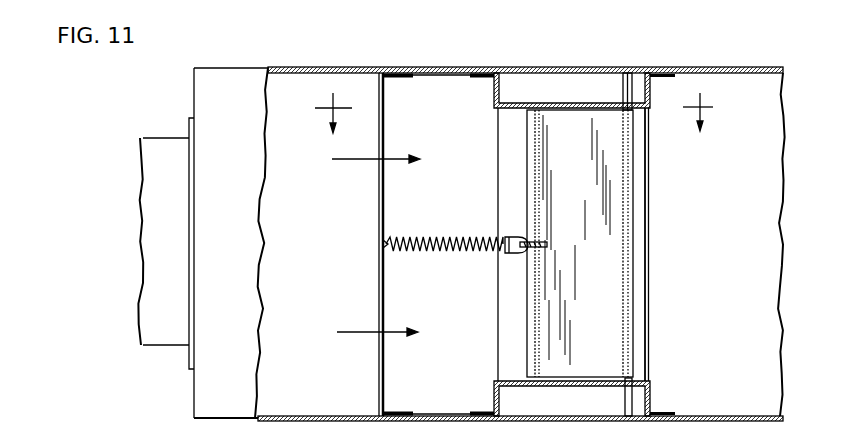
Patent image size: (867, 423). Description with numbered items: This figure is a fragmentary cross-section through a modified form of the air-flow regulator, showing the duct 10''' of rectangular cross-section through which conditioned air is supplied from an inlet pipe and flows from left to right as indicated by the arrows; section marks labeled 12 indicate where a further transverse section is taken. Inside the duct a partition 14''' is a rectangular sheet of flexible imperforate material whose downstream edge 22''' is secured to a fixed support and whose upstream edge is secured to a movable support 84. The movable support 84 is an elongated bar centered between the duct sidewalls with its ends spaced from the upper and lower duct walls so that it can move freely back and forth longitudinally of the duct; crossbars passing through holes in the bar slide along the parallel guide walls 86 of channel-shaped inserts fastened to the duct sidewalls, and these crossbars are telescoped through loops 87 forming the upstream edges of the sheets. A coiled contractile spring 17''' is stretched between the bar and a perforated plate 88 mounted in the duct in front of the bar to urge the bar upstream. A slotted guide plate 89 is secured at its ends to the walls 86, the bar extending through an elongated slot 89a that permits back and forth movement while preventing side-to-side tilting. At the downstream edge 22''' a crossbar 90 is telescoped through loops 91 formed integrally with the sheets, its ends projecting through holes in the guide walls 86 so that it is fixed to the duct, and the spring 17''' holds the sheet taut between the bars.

The duct 10''' is at (461, 228).
The section line 12 is at (519, 108).
The partition 14''' is at (576, 243).
The coiled contractile spring 17''' is at (443, 262).
The downstream edge 22''' is at (680, 244).
The movable support 84 is at (521, 254).
The guide wall 86 is at (512, 108).
The loop 87 is at (527, 327).
The perforated plate 88 is at (380, 192).
The slotted guide plate 89 is at (508, 308).
The elongated slot 89a is at (549, 244).
The crossbar 90 is at (630, 73).
The loop 91 is at (628, 305).